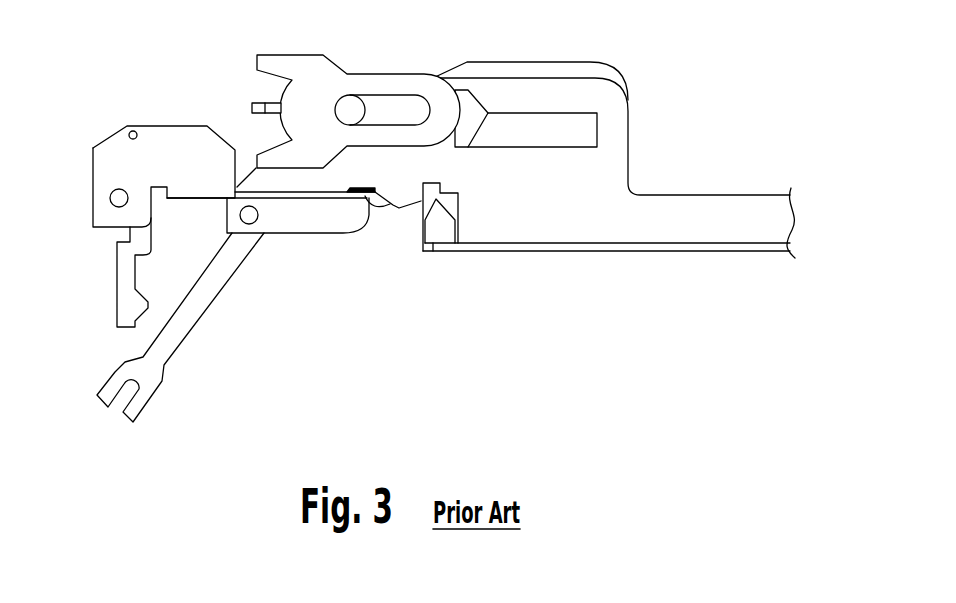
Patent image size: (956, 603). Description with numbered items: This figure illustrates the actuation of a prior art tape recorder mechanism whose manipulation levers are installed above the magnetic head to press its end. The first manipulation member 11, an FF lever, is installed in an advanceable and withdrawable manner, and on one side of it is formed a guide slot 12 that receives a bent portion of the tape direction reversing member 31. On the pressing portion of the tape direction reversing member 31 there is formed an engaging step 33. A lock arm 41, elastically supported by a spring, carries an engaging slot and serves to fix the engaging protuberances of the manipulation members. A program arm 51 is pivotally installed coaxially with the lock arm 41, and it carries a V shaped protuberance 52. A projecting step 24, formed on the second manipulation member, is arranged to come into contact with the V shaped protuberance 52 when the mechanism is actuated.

The first manipulation member 11 is at (624, 165).
The guide slot 12 is at (478, 112).
The projecting step 24 is at (445, 235).
The tape direction reversing member 31 is at (403, 87).
The engaging step 33 is at (252, 104).
The lock arm 41 is at (123, 158).
The program arm 51 is at (313, 222).
The V shaped protuberance 52 is at (368, 205).